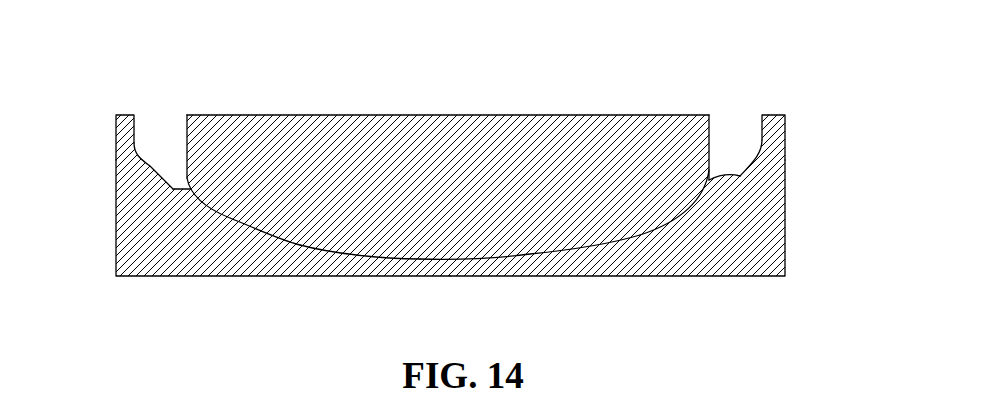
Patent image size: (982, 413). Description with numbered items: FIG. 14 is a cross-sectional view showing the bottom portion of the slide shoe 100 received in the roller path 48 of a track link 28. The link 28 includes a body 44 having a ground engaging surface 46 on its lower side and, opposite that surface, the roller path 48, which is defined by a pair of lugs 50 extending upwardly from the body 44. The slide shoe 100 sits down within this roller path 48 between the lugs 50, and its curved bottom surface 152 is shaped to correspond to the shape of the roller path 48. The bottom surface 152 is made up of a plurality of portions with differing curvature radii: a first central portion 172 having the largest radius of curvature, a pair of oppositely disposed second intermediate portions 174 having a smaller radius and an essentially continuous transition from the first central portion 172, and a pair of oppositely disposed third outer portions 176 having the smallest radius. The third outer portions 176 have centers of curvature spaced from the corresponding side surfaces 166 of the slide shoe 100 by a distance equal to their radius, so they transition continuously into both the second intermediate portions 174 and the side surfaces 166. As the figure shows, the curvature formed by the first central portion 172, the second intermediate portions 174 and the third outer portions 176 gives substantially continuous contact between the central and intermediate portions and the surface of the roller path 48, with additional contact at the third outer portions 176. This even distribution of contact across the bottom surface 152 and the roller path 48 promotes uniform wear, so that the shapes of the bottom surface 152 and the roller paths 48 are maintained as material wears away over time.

The link 28 is at (110, 170).
The body 44 is at (142, 257).
The ground engaging surface 46 is at (760, 278).
The roller path 48 is at (153, 168).
The lugs 50 is at (116, 132).
The slide shoe 100 is at (443, 127).
The bottom surface 152 is at (367, 253).
The side surface 166 is at (187, 155).
The first central portion 172 is at (468, 258).
The second intermediate portions 174 is at (245, 225).
The third outer portions 176 is at (173, 189).